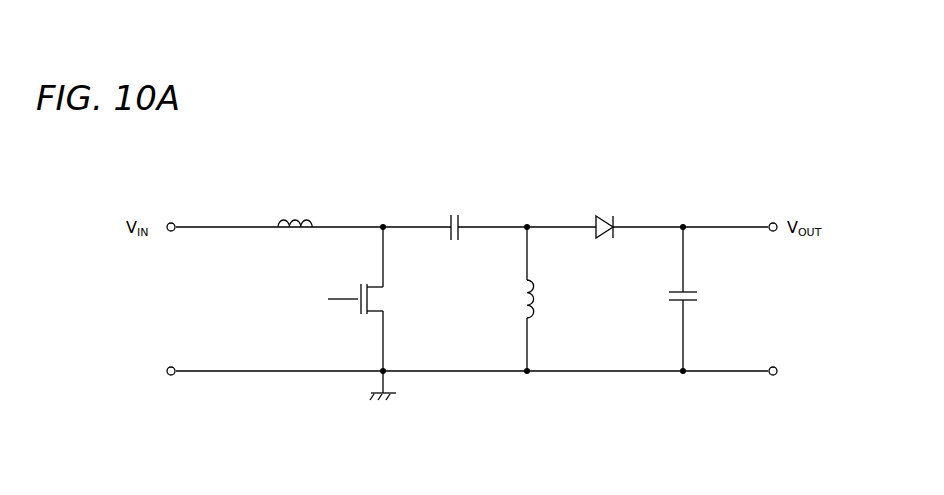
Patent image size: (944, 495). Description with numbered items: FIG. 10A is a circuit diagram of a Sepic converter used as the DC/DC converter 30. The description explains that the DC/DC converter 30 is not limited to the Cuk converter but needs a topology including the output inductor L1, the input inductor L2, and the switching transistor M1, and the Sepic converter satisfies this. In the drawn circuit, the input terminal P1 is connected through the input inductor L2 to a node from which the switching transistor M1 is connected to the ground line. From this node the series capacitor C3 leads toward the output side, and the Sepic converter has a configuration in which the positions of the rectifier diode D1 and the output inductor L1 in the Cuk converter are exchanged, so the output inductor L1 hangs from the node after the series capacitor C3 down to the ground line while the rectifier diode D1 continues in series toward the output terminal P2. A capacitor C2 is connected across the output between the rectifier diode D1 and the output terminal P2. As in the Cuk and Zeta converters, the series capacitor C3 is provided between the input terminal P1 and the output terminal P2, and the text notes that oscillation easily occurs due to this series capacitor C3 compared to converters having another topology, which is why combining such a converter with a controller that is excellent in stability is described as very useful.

The input terminal P1 is at (174, 222).
The input inductor L2 is at (294, 219).
The series capacitor C3 is at (455, 212).
The rectifier diode D1 is at (606, 212).
The output terminal P2 is at (776, 222).
The switching transistor M1 is at (388, 299).
The output inductor L1 is at (538, 297).
The output capacitor C2 is at (700, 297).
The DC/DC converter 30 is at (492, 442).